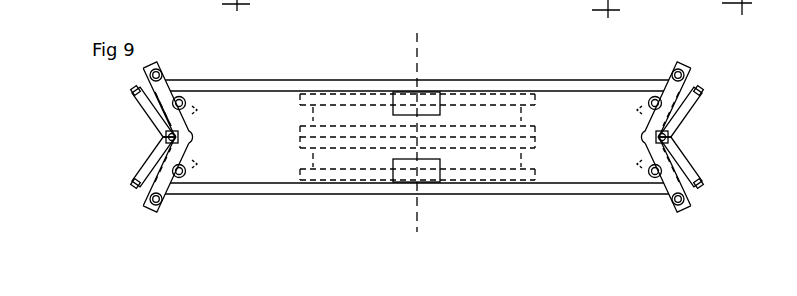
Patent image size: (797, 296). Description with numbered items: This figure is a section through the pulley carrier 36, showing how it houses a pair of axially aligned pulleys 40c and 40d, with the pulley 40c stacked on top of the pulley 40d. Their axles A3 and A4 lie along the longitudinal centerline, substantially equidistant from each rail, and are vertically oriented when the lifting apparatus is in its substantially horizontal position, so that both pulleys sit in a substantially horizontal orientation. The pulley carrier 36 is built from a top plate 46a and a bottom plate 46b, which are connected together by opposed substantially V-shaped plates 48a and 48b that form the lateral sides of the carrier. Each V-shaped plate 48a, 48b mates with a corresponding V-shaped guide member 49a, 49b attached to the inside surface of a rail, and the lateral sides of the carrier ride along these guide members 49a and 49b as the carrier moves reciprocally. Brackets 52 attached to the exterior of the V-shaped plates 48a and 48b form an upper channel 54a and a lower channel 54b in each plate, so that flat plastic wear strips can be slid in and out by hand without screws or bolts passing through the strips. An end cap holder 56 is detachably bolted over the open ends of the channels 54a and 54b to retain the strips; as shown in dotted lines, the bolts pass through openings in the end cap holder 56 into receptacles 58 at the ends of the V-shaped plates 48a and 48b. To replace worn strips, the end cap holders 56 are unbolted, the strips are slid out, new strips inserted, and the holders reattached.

The pulley carrier 36 is at (283, 80).
The pulley 40c is at (338, 80).
The pulley 40d is at (490, 197).
The axle A3 is at (420, 58).
The axle A4 is at (420, 216).
The top plate 46a is at (522, 79).
The bottom plate 46b is at (290, 194).
The V-shaped plate 48a is at (698, 70).
The V-shaped plate 48b is at (140, 198).
The V-shaped guide member 49a is at (693, 117).
The V-shaped guide member 49b is at (133, 110).
The bracket 52 is at (133, 90).
The upper channel 54a is at (158, 90).
The lower channel 54b is at (168, 183).
The end cap holder 56 is at (197, 163).
The receptacle 58 is at (179, 99).